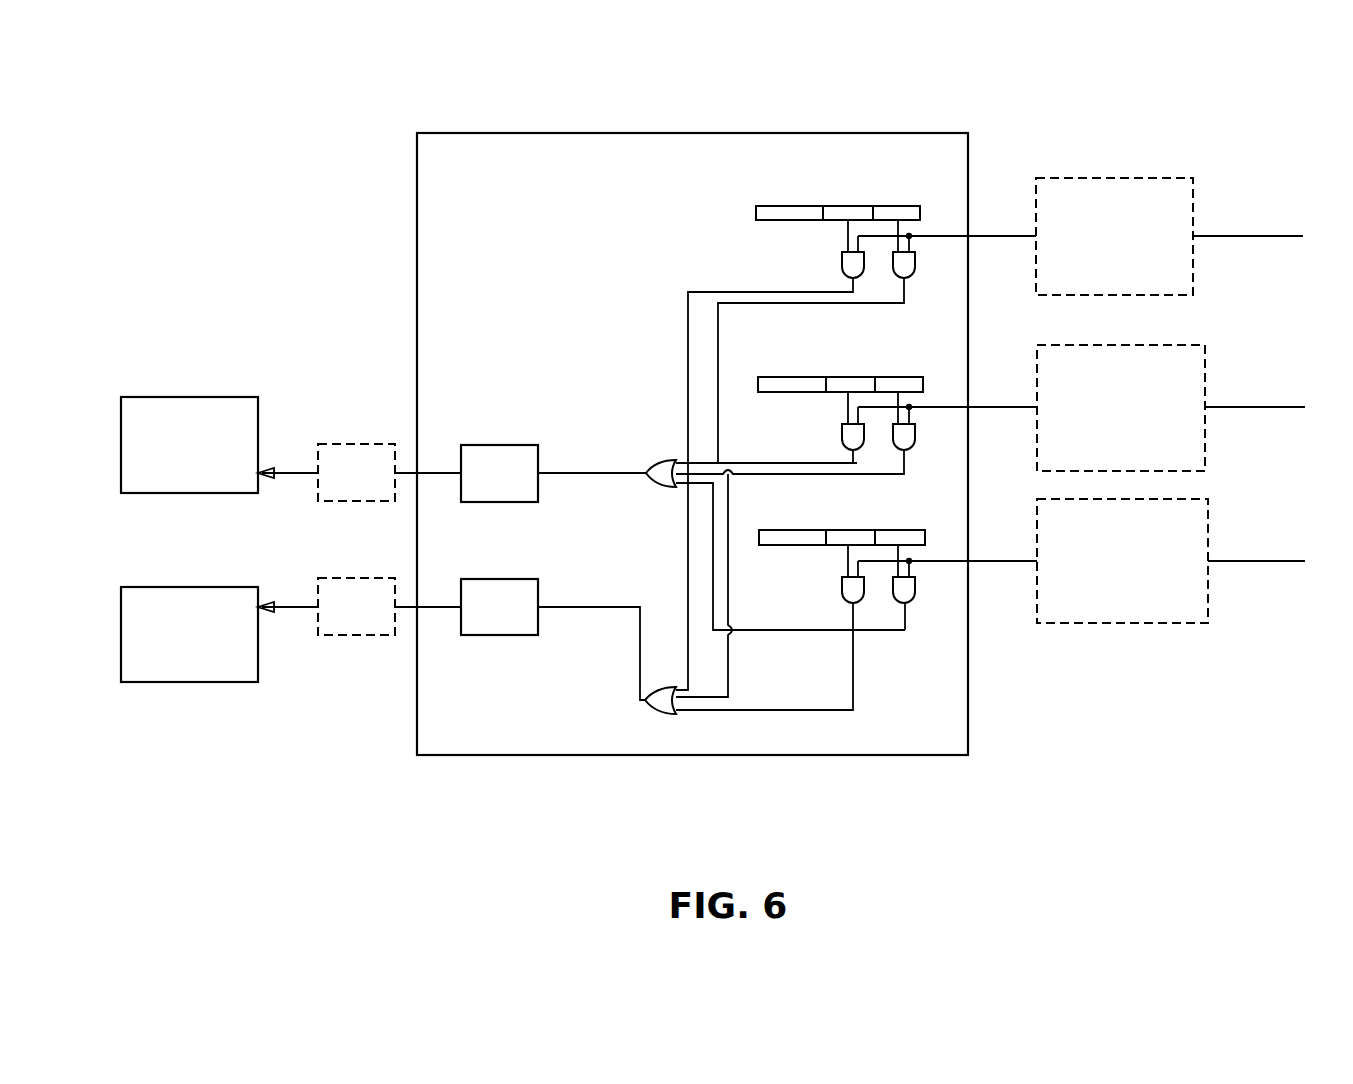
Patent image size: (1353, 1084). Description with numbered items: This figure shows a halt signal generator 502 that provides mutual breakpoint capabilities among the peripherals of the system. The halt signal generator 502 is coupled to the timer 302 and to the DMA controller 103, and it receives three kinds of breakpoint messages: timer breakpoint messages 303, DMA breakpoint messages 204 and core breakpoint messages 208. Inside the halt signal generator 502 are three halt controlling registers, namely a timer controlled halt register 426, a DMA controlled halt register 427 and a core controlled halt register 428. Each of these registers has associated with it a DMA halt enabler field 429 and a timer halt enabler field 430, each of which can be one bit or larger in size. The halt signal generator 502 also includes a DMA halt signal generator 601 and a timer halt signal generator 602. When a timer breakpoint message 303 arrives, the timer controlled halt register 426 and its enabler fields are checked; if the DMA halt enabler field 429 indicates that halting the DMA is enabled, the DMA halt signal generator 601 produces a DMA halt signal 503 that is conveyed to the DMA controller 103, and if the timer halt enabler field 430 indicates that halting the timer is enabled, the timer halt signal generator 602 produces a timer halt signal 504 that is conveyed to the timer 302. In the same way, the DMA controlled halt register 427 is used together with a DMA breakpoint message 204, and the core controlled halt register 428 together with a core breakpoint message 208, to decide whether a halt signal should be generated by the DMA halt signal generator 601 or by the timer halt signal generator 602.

The halt signal generator 502 is at (929, 133).
The timer 302 is at (192, 397).
The DMA controller 103 is at (192, 587).
The timer halt signal 504 is at (359, 472).
The DMA halt signal 503 is at (359, 606).
The timer halt signal generator 602 is at (568, 473).
The DMA halt signal generator 601 is at (568, 646).
The timer controlled halt register 426 is at (756, 213).
The DMA controlled halt register 427 is at (758, 383).
The core controlled halt register 428 is at (759, 540).
The DMA halt enabler field 429 is at (838, 217).
The timer halt enabler field 430 is at (890, 217).
The timer breakpoint message 303 is at (1112, 178).
The DMA breakpoint message 204 is at (1172, 345).
The core breakpoint message 208 is at (1132, 623).